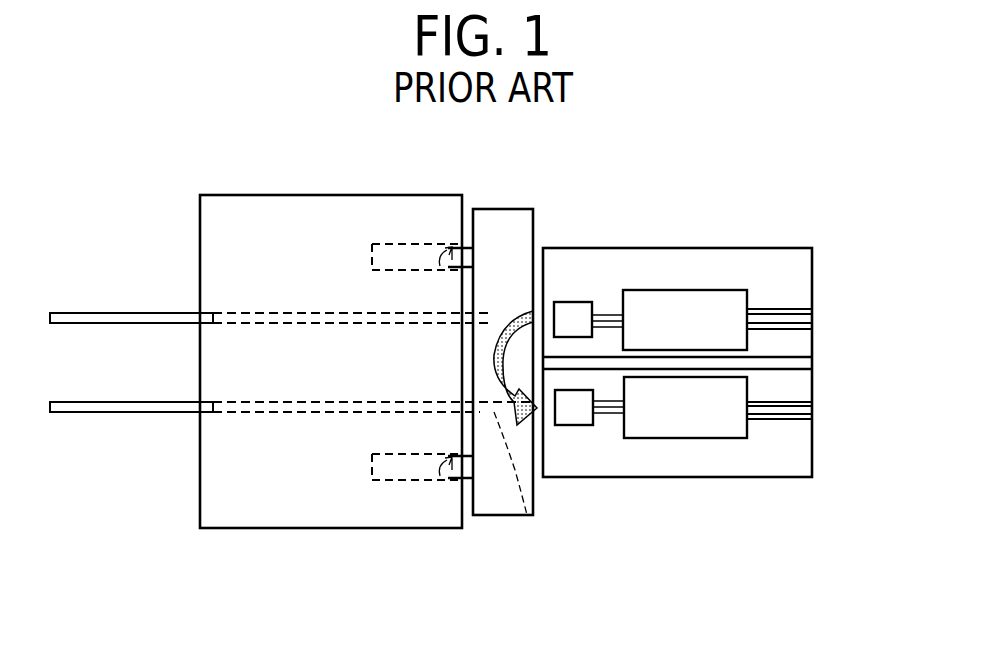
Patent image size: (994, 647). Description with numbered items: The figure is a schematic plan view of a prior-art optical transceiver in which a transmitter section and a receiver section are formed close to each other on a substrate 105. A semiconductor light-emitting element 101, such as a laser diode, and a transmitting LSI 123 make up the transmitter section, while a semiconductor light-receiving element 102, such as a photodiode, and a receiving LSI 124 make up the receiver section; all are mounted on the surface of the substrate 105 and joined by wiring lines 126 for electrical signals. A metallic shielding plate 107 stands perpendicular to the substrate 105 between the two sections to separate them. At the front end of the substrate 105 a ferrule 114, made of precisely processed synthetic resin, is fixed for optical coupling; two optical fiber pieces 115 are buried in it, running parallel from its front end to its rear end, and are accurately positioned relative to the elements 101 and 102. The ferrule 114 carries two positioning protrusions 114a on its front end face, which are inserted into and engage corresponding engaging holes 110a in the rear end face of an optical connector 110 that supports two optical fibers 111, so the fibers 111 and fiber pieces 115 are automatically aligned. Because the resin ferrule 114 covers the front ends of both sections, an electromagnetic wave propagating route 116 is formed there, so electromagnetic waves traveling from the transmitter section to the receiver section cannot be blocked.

The semiconductor light-emitting element 101 is at (572, 300).
The semiconductor light-receiving element 102 is at (573, 418).
The substrate 105 is at (658, 257).
The metallic shielding plate 107 is at (805, 365).
The optical connector 110 is at (330, 517).
The engaging holes 110a is at (393, 243).
The optical fibers 111 is at (122, 318).
The ferrule 114 is at (504, 215).
The positioning protrusions 114a is at (440, 485).
The optical fiber pieces 115 is at (527, 518).
The electromagnetic wave propagating route 116 is at (490, 367).
The transmitting LSI 123 is at (723, 300).
The receiving LSI 124 is at (715, 430).
The wiring lines 126 is at (790, 308).